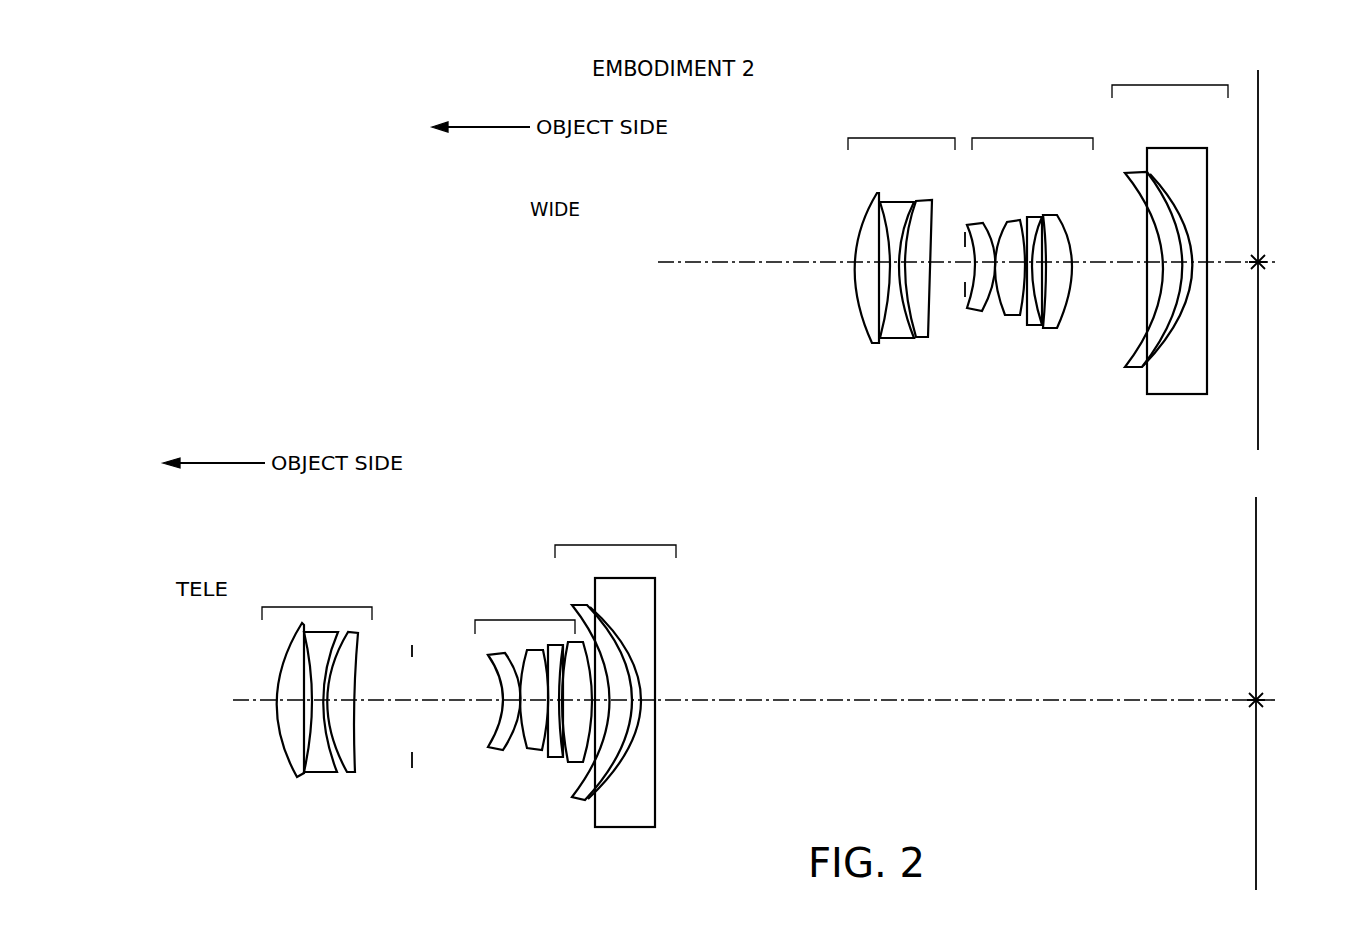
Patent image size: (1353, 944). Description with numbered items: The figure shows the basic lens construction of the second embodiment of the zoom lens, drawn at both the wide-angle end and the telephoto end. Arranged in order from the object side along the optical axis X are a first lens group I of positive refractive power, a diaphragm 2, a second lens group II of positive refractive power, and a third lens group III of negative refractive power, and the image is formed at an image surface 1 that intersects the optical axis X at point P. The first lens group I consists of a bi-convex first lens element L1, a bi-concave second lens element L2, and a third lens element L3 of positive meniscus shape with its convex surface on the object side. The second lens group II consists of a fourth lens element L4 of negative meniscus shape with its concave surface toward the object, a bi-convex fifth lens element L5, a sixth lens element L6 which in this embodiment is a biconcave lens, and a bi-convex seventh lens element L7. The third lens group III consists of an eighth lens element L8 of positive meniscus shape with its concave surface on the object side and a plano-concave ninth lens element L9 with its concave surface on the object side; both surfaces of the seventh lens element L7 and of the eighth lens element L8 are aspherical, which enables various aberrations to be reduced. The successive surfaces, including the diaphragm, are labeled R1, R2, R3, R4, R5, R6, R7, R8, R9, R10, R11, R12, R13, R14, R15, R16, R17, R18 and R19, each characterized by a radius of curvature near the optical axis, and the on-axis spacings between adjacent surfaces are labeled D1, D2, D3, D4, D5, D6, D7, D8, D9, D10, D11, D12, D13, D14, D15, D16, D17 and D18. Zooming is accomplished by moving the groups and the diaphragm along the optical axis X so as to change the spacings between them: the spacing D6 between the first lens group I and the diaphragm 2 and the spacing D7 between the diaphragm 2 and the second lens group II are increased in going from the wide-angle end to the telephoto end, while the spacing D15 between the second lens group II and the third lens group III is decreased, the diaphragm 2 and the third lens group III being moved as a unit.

The image surface 1 is at (1258, 74).
The diaphragm 2 is at (964, 232).
The optical axis X is at (707, 265).
The point of intersection of image surface and optical axis P is at (1255, 268).
The first lens group I is at (608, 366).
The second lens group II is at (784, 373).
The third lens group III is at (891, 309).
The first lens element L1 is at (875, 191).
The second lens element L2 is at (900, 200).
The third lens element L3 is at (930, 199).
The fourth lens element L4 is at (976, 224).
The fifth lens element L5 is at (1014, 219).
The sixth lens element L6 is at (1034, 216).
The seventh lens element L7 is at (1058, 214).
The eighth lens element L8 is at (1131, 173).
The ninth lens element L9 is at (1188, 148).
The on-axis spacing D1 is at (876, 260).
The on-axis spacing D2 is at (884, 262).
The on-axis spacing D3 is at (880, 240).
The on-axis spacing D4 is at (862, 267).
The on-axis spacing D5 is at (865, 280).
The spacing between first lens group and diaphragm D6 is at (955, 258).
The spacing between diaphragm and second lens group D7 is at (955, 267).
The on-axis spacing D8 is at (1000, 258).
The on-axis spacing D9 is at (1050, 225).
The on-axis spacing D10 is at (1045, 240).
The on-axis spacing D11 is at (1042, 250).
The on-axis spacing D12 is at (1035, 283).
The on-axis spacing D13 is at (1040, 267).
The on-axis spacing D14 is at (1168, 262).
The spacing between second lens group and third lens group D15 is at (1140, 268).
The on-axis spacing D16 is at (1172, 262).
The on-axis spacing D17 is at (1194, 258).
The on-axis spacing D18 is at (1196, 240).
The first lens surface R1 is at (860, 292).
The second lens surface R2 is at (878, 305).
The third lens surface R3 is at (882, 320).
The fourth lens surface R4 is at (903, 318).
The fifth lens surface R5 is at (902, 337).
The sixth lens surface R6 is at (927, 334).
The diaphragm surface R7 is at (957, 300).
The eighth lens surface R8 is at (966, 305).
The ninth lens surface R9 is at (980, 315).
The tenth lens surface R10 is at (1003, 316).
The eleventh lens surface R11 is at (1019, 317).
The twelfth lens surface R12 is at (1040, 328).
The thirteenth lens surface R13 is at (1046, 329).
The fourteenth lens surface R14 is at (1060, 329).
The fifteenth lens surface R15 is at (1068, 314).
The sixteenth lens surface R16 is at (1128, 368).
The seventeenth lens surface R17 is at (1162, 380).
The eighteenth lens surface R18 is at (1194, 300).
The nineteenth lens surface R19 is at (1236, 338).